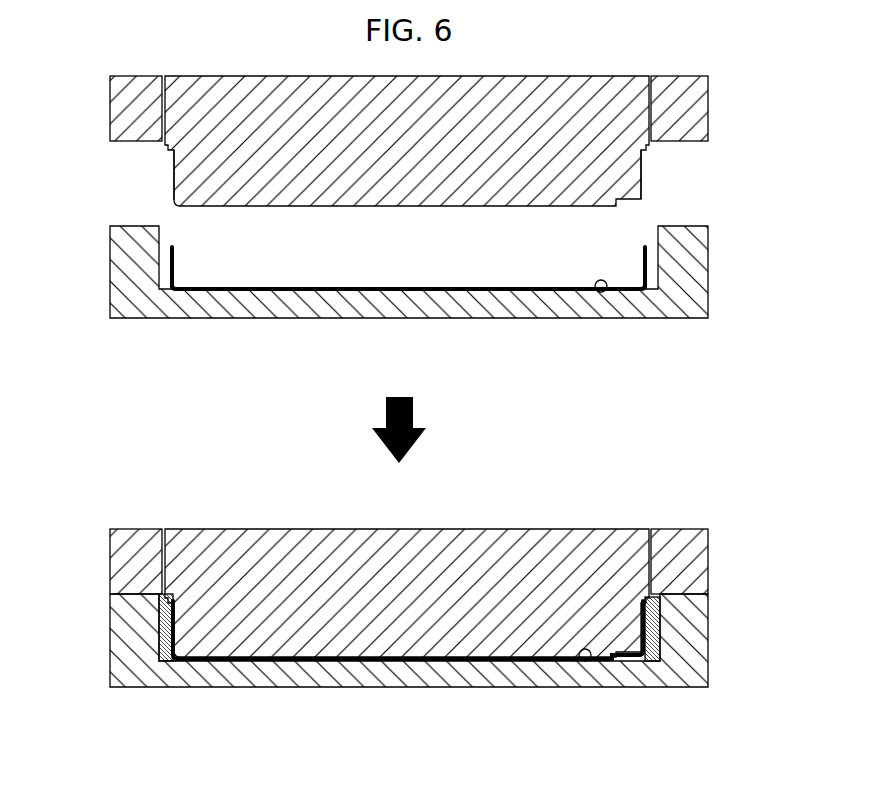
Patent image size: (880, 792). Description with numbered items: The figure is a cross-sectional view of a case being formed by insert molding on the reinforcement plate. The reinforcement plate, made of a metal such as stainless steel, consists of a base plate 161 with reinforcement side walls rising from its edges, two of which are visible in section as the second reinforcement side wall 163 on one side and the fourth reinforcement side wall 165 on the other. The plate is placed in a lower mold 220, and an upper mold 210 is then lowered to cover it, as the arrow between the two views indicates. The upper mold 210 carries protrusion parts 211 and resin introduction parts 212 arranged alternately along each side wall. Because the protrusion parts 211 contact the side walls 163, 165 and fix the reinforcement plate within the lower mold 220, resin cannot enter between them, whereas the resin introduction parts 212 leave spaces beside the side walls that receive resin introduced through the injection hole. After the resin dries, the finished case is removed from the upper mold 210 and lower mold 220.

The upper mold 210 is at (698, 104).
The protrusion parts 211 is at (174, 172).
The resin introduction parts 212 is at (641, 176).
The lower mold 220 is at (698, 244).
The base plate 161 is at (598, 292).
The second reinforcement side wall 163 is at (648, 270).
The fourth reinforcement side wall 165 is at (172, 264).